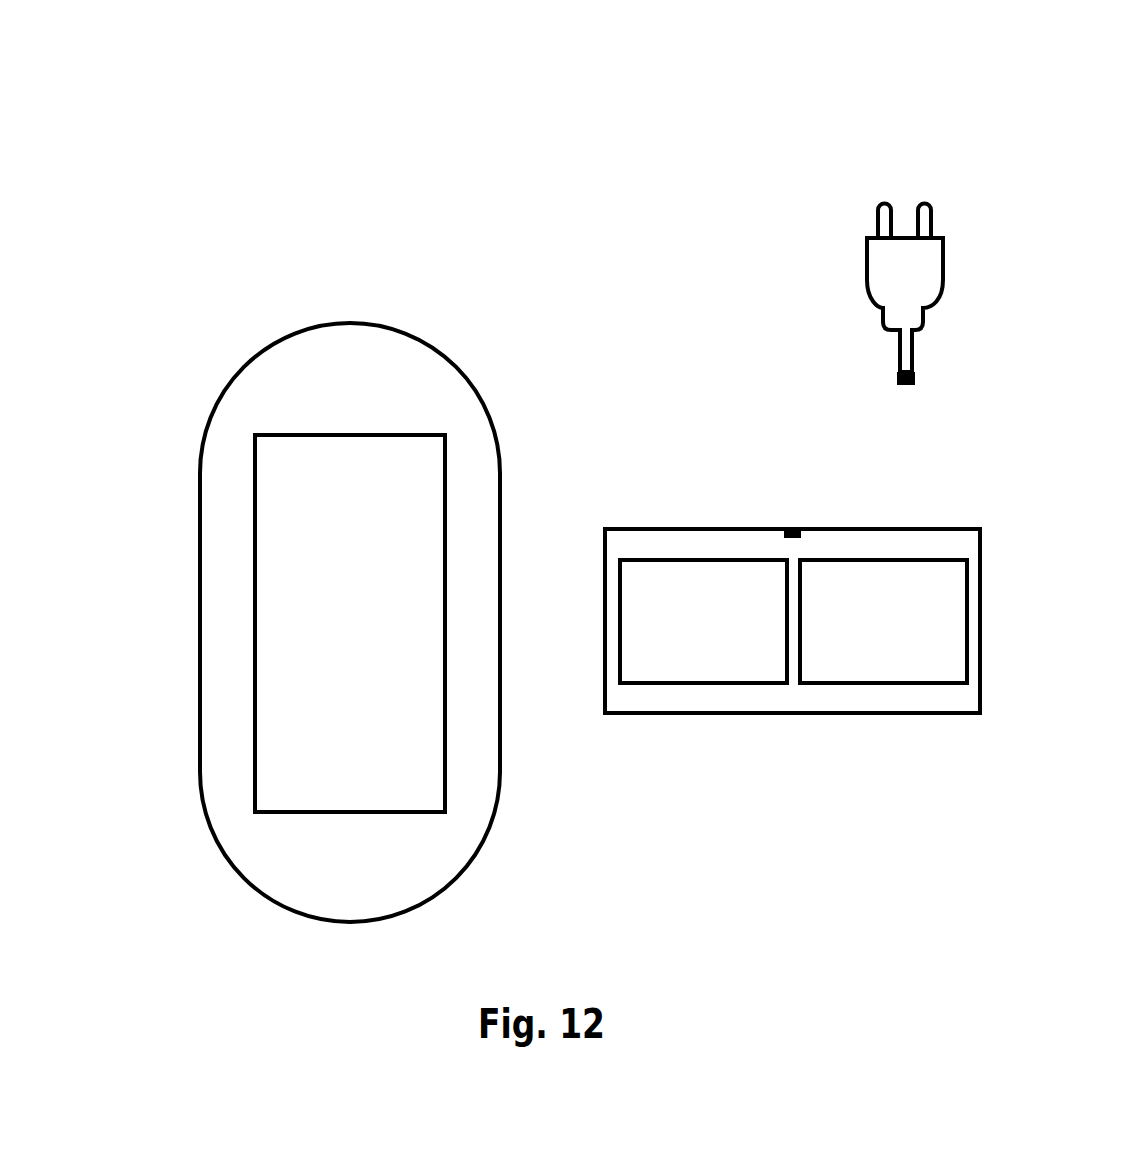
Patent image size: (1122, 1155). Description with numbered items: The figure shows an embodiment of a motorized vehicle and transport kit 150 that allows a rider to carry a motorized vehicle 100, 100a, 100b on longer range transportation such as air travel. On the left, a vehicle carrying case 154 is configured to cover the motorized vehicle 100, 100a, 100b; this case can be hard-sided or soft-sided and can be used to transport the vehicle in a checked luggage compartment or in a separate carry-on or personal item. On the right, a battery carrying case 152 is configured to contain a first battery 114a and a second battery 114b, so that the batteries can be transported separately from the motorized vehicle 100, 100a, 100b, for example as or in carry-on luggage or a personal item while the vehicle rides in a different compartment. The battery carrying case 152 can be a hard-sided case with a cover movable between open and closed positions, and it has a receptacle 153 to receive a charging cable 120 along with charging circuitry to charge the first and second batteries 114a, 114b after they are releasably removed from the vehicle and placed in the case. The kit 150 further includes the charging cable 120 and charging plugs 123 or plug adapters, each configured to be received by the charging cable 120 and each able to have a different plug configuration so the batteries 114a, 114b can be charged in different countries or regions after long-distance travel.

The motorized vehicle and transport kit 150 is at (572, 55).
The vehicle carrying case 154 is at (321, 326).
The motorized vehicle 100 is at (255, 549).
The motorized vehicle 100a is at (350, 623).
The motorized vehicle 100b is at (253, 469).
The charging cable 120 is at (897, 348).
The charging plugs 123 is at (878, 208).
The battery carrying case 152 is at (682, 528).
The receptacle 153 is at (793, 528).
The first battery 114a is at (655, 685).
The second battery 114b is at (845, 685).